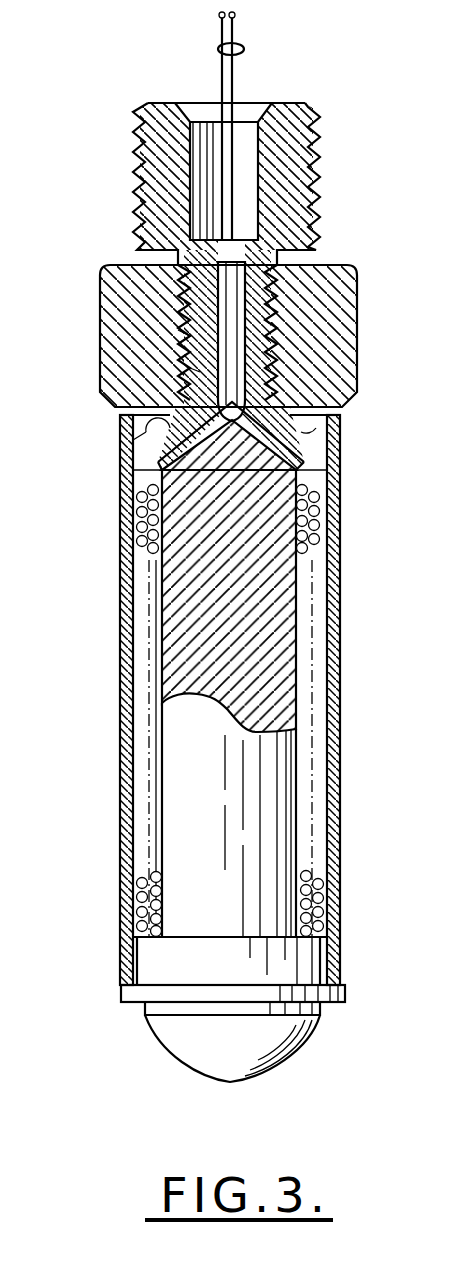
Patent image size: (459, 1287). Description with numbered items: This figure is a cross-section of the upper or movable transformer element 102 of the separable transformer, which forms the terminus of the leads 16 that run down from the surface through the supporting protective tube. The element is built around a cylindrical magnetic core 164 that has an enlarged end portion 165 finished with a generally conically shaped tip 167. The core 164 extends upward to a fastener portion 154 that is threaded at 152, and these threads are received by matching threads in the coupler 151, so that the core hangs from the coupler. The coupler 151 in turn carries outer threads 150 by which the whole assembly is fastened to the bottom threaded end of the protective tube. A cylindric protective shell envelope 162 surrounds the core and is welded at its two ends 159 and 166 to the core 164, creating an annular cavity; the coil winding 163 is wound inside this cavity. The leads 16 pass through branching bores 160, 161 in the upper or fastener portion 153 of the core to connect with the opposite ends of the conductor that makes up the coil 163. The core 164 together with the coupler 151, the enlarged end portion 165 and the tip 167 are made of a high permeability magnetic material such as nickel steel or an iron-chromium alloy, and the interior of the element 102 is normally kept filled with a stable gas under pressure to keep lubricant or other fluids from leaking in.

The leads 16 is at (219, 49).
The upper or movable transformer element 102 is at (293, 82).
The outer threads 150 is at (133, 180).
The coupler 151 is at (135, 298).
The threads 152 is at (178, 336).
The upper or fastener portion of the core 153 is at (198, 370).
The fastener portion 154 is at (300, 320).
The end of protective shell envelope 159 is at (125, 435).
The branching bore 160 is at (163, 455).
The branching bore 161 is at (340, 417).
The cylindric protective shell envelope 162 is at (134, 538).
The coil winding 163 is at (118, 580).
The core 164 is at (165, 658).
The enlarged end portion 165 is at (340, 950).
The end of protective shell envelope 166 is at (121, 988).
The conically shaped tip 167 is at (166, 1054).